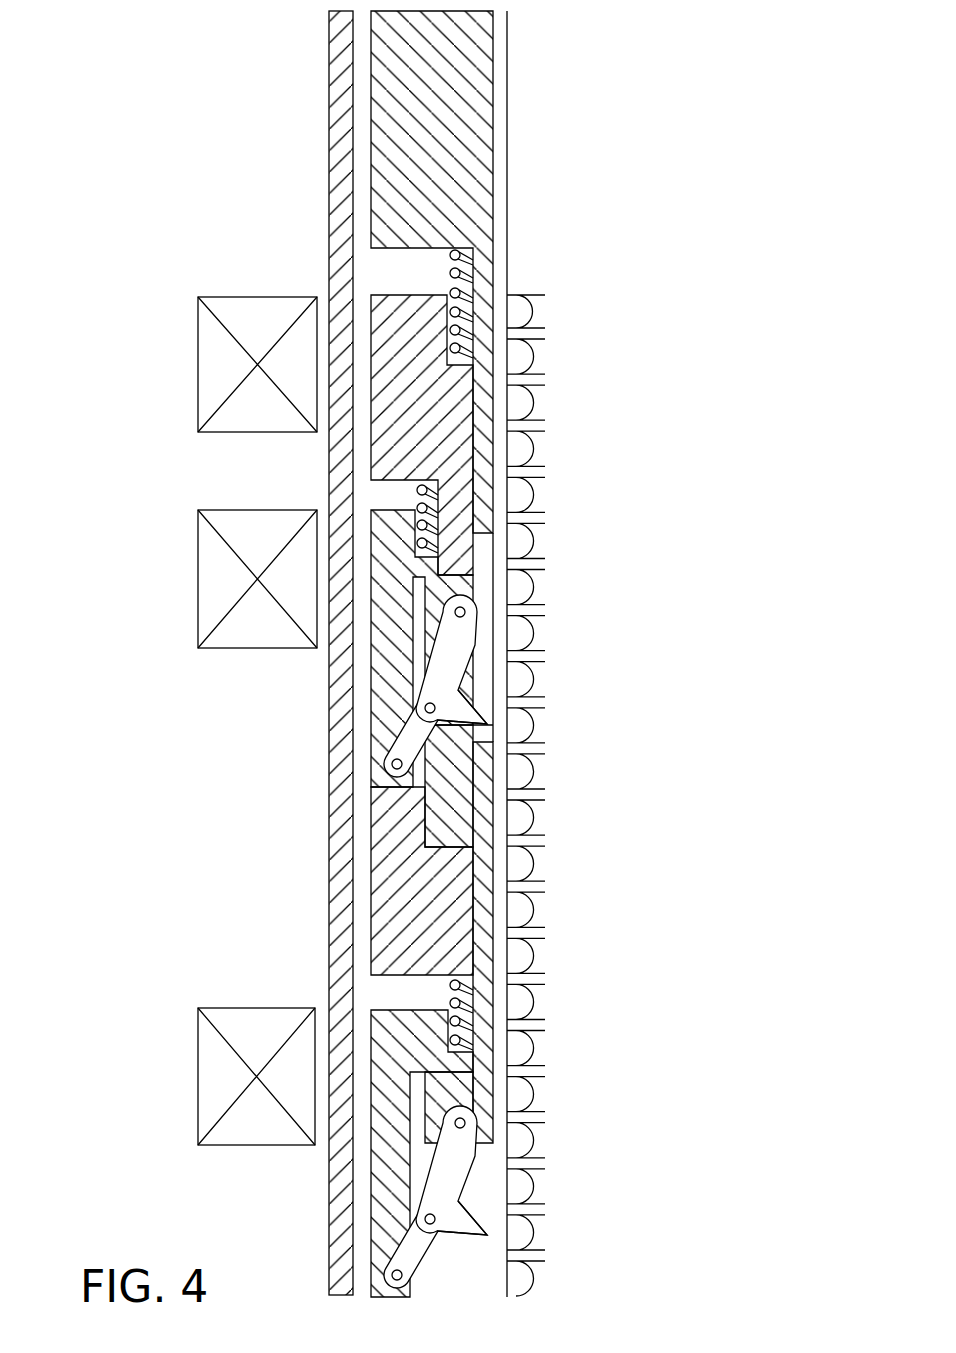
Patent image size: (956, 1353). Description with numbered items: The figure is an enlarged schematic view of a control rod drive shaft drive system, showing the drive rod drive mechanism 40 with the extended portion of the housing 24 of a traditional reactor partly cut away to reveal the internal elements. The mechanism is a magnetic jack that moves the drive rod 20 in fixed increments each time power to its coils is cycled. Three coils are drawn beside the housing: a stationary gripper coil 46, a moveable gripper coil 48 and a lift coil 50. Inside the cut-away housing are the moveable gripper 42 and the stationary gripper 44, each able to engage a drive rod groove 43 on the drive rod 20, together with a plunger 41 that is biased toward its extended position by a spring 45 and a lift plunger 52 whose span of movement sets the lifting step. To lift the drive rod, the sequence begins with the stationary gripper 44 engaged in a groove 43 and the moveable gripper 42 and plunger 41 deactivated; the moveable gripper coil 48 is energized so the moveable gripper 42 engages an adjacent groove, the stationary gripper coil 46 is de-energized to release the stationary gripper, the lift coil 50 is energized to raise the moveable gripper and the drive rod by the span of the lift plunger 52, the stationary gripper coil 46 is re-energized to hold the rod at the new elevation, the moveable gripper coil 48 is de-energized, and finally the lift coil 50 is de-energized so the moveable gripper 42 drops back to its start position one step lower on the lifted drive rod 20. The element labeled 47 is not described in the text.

The drive rod 20 is at (540, 447).
The housing 24 is at (329, 150).
The drive rod drive mechanism 40 is at (448, 518).
The plunger 41 is at (383, 661).
The moveable gripper 42 is at (465, 687).
The drive rod groove 43 is at (517, 727).
The stationary gripper 44 is at (457, 1198).
The spring 45 is at (415, 500).
The stationary gripper coil 46 is at (198, 1047).
The drive housing 47 is at (520, 158).
The moveable gripper coil 48 is at (198, 545).
The lift coil 50 is at (198, 340).
The lift plunger 52 is at (371, 435).